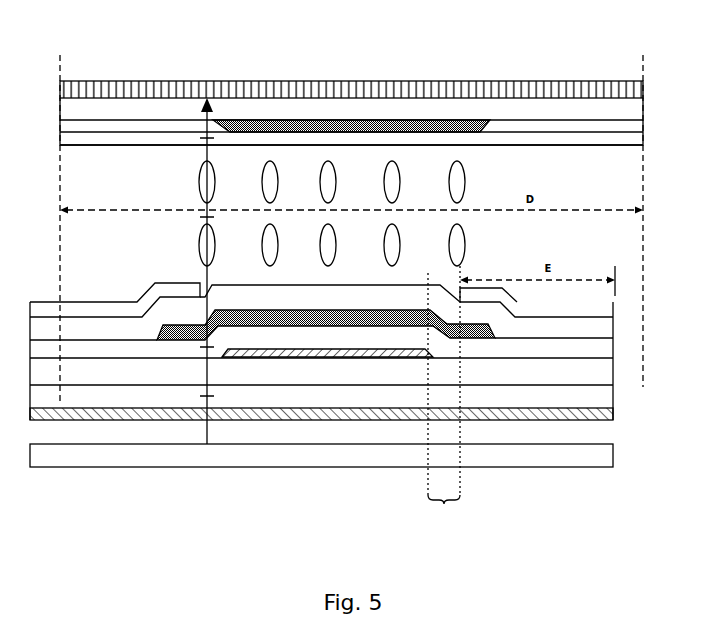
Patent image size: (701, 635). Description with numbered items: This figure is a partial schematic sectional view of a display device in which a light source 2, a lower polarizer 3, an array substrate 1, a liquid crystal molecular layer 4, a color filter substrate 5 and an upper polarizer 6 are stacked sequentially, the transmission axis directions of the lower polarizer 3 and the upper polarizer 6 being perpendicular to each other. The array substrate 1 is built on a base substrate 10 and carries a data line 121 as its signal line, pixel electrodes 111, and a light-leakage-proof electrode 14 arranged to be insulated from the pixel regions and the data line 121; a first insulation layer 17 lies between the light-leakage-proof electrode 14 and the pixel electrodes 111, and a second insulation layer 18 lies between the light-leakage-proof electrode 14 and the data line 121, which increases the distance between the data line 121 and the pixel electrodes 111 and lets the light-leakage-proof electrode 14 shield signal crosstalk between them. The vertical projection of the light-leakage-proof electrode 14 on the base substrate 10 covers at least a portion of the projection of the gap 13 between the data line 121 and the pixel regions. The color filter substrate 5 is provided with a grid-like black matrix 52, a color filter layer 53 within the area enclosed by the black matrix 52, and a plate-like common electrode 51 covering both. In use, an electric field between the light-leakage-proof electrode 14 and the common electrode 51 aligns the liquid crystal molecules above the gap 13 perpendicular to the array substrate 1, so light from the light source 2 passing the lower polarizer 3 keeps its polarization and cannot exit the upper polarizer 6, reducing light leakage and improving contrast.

The array substrate 1 is at (620, 302).
The light source 2 is at (585, 452).
The lower polarizer 3 is at (613, 413).
The liquid crystal molecular layer 4 is at (466, 245).
The color filter substrate 5 is at (648, 97).
The upper polarizer 6 is at (620, 85).
The base substrate 10 is at (513, 393).
The gap 13 is at (443, 402).
The light-leakage-proof electrode 14 is at (233, 318).
The first insulation layer 17 is at (296, 294).
The second insulation layer 18 is at (406, 335).
The common electrode 51 is at (330, 140).
The black matrix 52 is at (270, 125).
The color filter layer 53 is at (188, 125).
The pixel electrodes 111 is at (167, 290).
The data line 121 is at (340, 355).